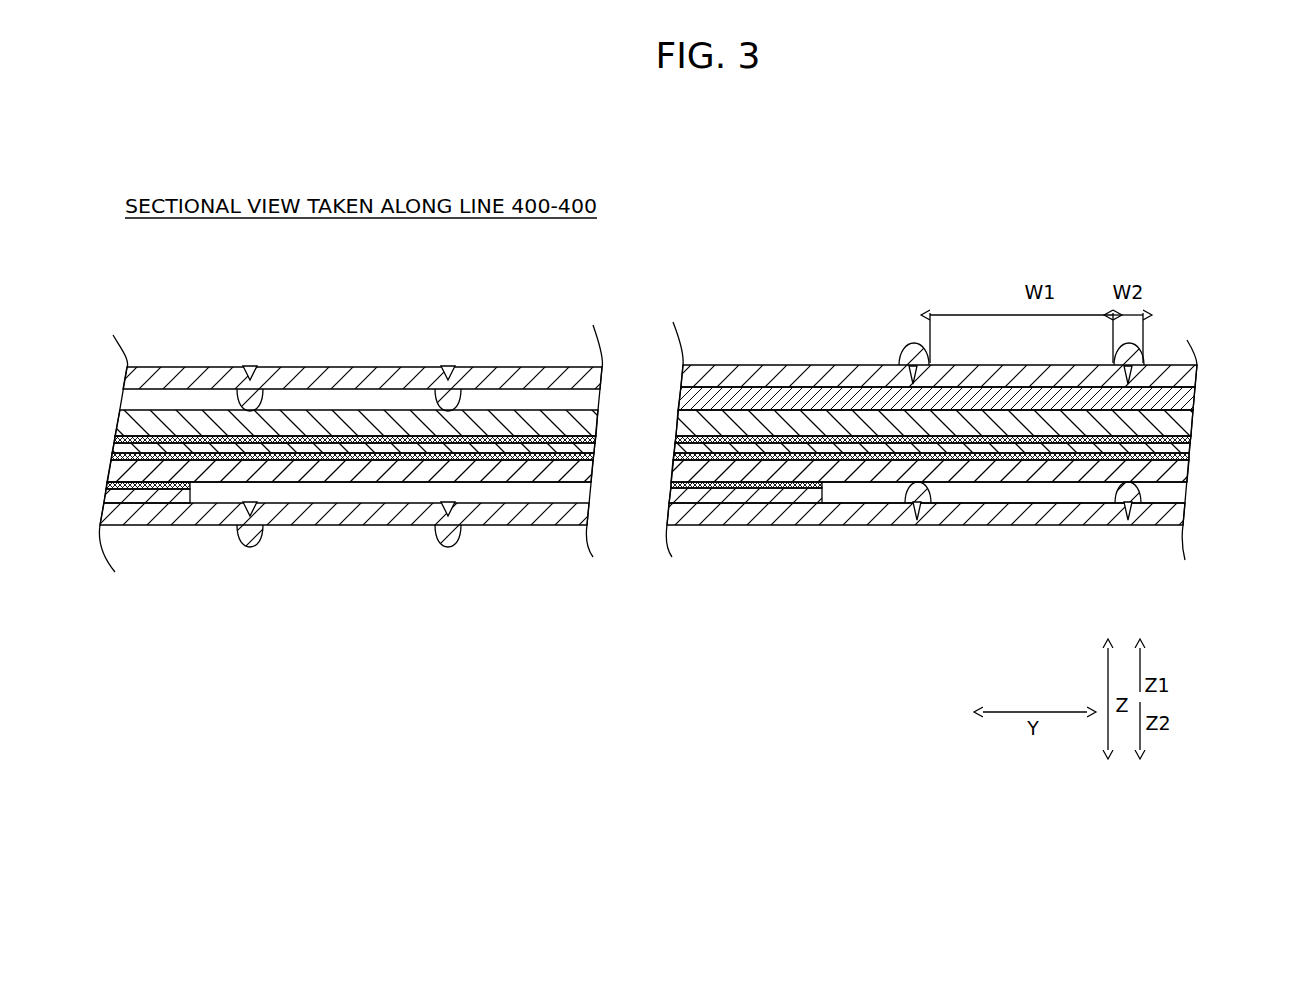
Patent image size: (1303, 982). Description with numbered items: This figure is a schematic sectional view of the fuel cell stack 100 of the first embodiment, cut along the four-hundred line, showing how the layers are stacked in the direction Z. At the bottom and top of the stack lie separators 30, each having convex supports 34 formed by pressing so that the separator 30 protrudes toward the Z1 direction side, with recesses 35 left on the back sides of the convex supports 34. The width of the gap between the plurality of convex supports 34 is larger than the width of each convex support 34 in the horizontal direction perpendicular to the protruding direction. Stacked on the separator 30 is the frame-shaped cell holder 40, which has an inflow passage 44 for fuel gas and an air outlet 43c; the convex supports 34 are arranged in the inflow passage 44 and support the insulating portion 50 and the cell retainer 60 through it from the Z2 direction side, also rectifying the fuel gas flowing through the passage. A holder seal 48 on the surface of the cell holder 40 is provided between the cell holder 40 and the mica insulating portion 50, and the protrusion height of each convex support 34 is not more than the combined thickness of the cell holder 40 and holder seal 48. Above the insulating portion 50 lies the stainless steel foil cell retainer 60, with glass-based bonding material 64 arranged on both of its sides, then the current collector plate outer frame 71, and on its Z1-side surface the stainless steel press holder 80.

The vibration device 100 is at (910, 305).
The separator 30 is at (1198, 366).
The press holder 80 is at (1196, 396).
The current collector plate outer frame 71 is at (1193, 421).
The glass-based bonding material 64 is at (1191, 439).
The cell retainer 60 is at (1190, 448).
The insulating portion 50 is at (1188, 470).
The holder seal 48 is at (765, 486).
The cell holder 40 is at (788, 496).
The air outlet 43c is at (378, 498).
The inflow passage 44 is at (1005, 490).
The convex supports 34 is at (256, 546).
The recesses 35 is at (250, 366).